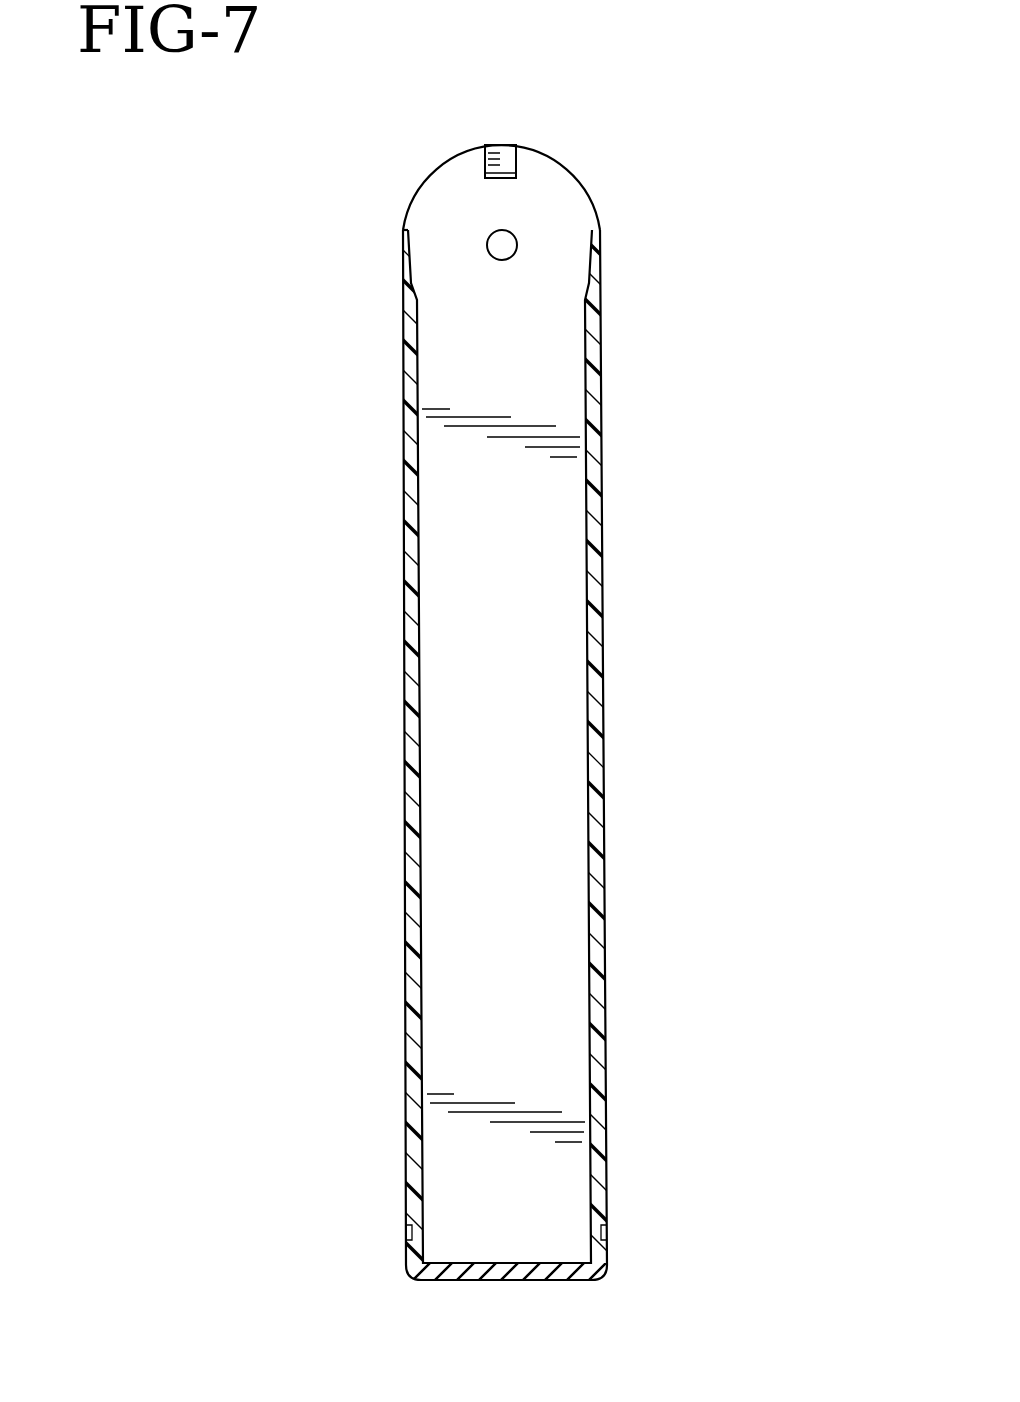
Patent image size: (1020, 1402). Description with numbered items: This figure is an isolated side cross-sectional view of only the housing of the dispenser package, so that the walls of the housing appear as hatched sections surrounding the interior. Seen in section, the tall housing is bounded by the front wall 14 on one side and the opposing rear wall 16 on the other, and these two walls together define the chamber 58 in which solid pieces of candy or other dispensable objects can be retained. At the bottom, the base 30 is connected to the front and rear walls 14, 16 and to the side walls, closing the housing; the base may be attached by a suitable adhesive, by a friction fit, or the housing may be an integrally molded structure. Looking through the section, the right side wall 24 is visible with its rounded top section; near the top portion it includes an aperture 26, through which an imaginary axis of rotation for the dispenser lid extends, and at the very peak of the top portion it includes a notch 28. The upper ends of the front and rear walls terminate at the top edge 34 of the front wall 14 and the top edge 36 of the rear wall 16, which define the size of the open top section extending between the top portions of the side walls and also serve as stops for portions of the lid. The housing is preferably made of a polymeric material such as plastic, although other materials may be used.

The front wall 14 is at (604, 701).
The rear wall 16 is at (403, 673).
The right side wall 24 is at (535, 333).
The aperture 26 is at (487, 245).
The notch 28 is at (505, 162).
The base 30 is at (593, 1276).
The top edge 34 is at (600, 230).
The top edge 36 is at (402, 229).
The chamber 58 is at (540, 497).